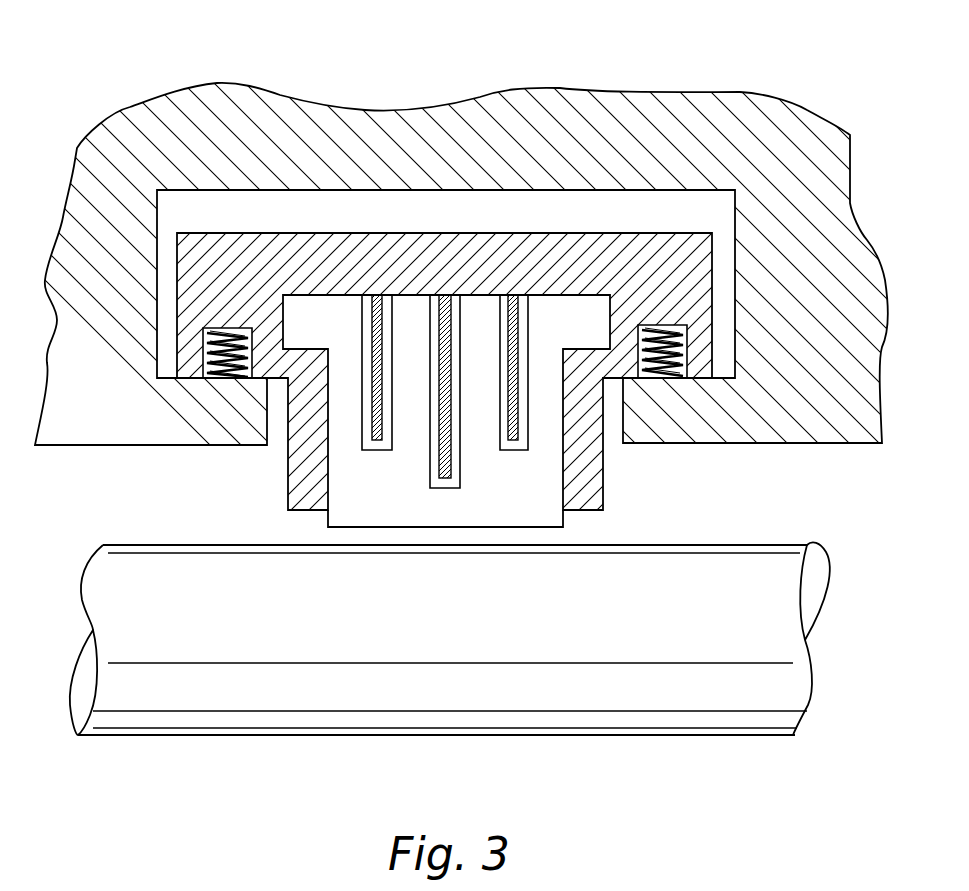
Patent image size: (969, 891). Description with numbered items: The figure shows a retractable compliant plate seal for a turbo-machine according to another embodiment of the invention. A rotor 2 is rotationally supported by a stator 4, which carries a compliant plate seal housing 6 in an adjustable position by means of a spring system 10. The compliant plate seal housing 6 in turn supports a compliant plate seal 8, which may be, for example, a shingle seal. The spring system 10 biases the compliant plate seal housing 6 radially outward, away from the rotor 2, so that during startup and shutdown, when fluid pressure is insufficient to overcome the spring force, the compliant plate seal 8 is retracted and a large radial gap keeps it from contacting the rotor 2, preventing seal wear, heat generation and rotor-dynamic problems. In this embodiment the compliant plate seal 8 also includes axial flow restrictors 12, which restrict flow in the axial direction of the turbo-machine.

The rotor 2 is at (456, 625).
The stator 4 is at (263, 137).
The compliant plate seal housing 6 is at (590, 260).
The compliant plate seal 8 is at (512, 502).
The spring system 10 is at (205, 355).
The axial flow restrictors 12 is at (372, 428).